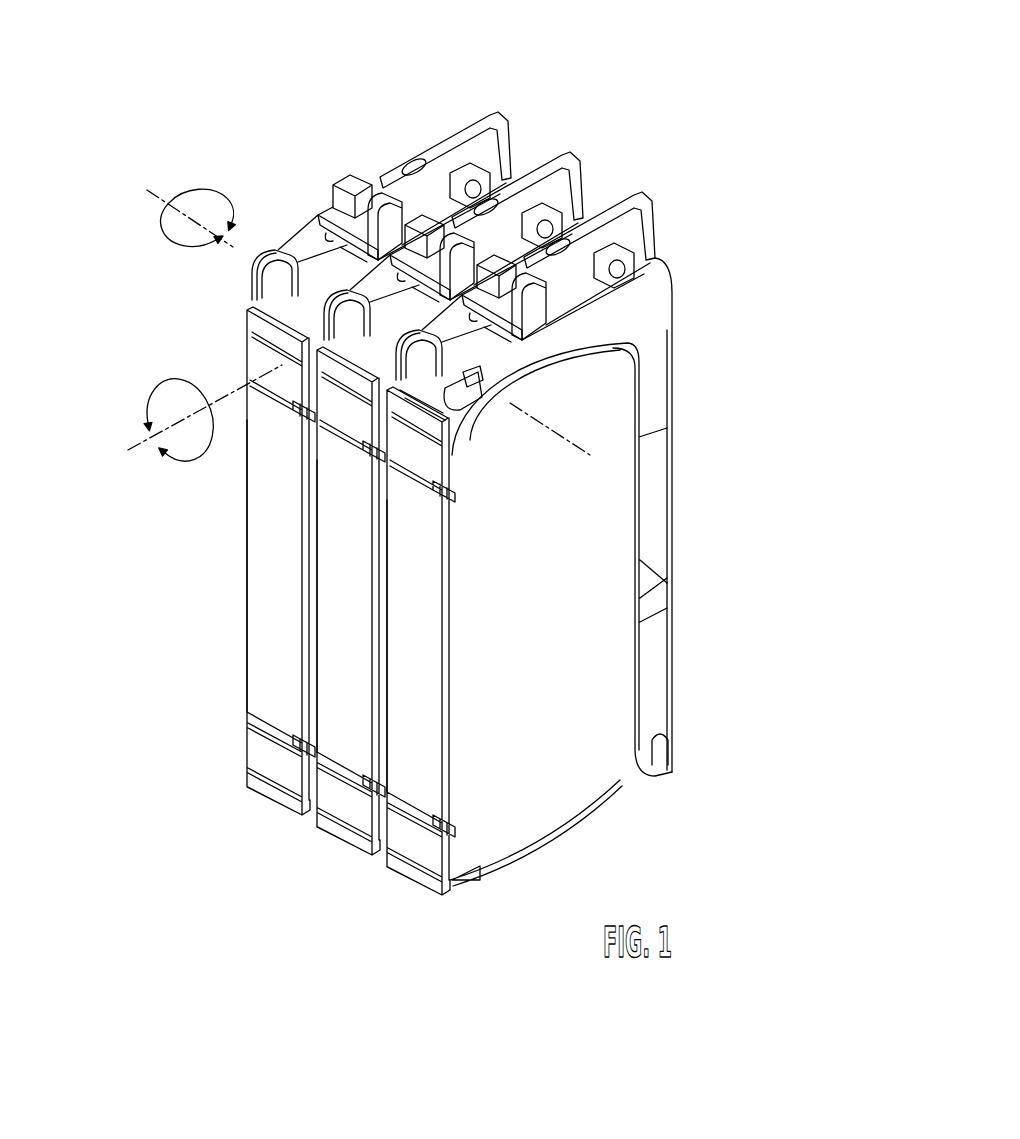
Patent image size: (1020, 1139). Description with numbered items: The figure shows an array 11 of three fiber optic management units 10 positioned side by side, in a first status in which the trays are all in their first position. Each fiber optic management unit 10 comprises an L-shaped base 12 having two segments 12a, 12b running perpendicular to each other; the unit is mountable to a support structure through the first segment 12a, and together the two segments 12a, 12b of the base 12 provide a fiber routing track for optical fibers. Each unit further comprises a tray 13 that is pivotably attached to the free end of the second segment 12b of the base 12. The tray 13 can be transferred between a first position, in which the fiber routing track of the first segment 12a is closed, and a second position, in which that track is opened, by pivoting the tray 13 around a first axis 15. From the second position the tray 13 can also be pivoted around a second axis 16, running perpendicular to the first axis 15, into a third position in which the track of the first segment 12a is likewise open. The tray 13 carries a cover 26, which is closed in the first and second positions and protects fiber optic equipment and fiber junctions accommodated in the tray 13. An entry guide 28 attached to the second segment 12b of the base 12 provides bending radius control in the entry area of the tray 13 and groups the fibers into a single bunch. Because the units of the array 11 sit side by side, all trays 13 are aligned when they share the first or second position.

The fiber optic management unit 10 is at (405, 593).
The array 11 is at (459, 507).
The base 12 is at (574, 499).
The first segment 12a is at (668, 498).
The second segment 12b is at (620, 337).
The tray 13 is at (407, 675).
The first axis 15 is at (162, 198).
The second axis 16 is at (138, 443).
The cover 26 is at (532, 692).
The entry guide 28 is at (488, 258).